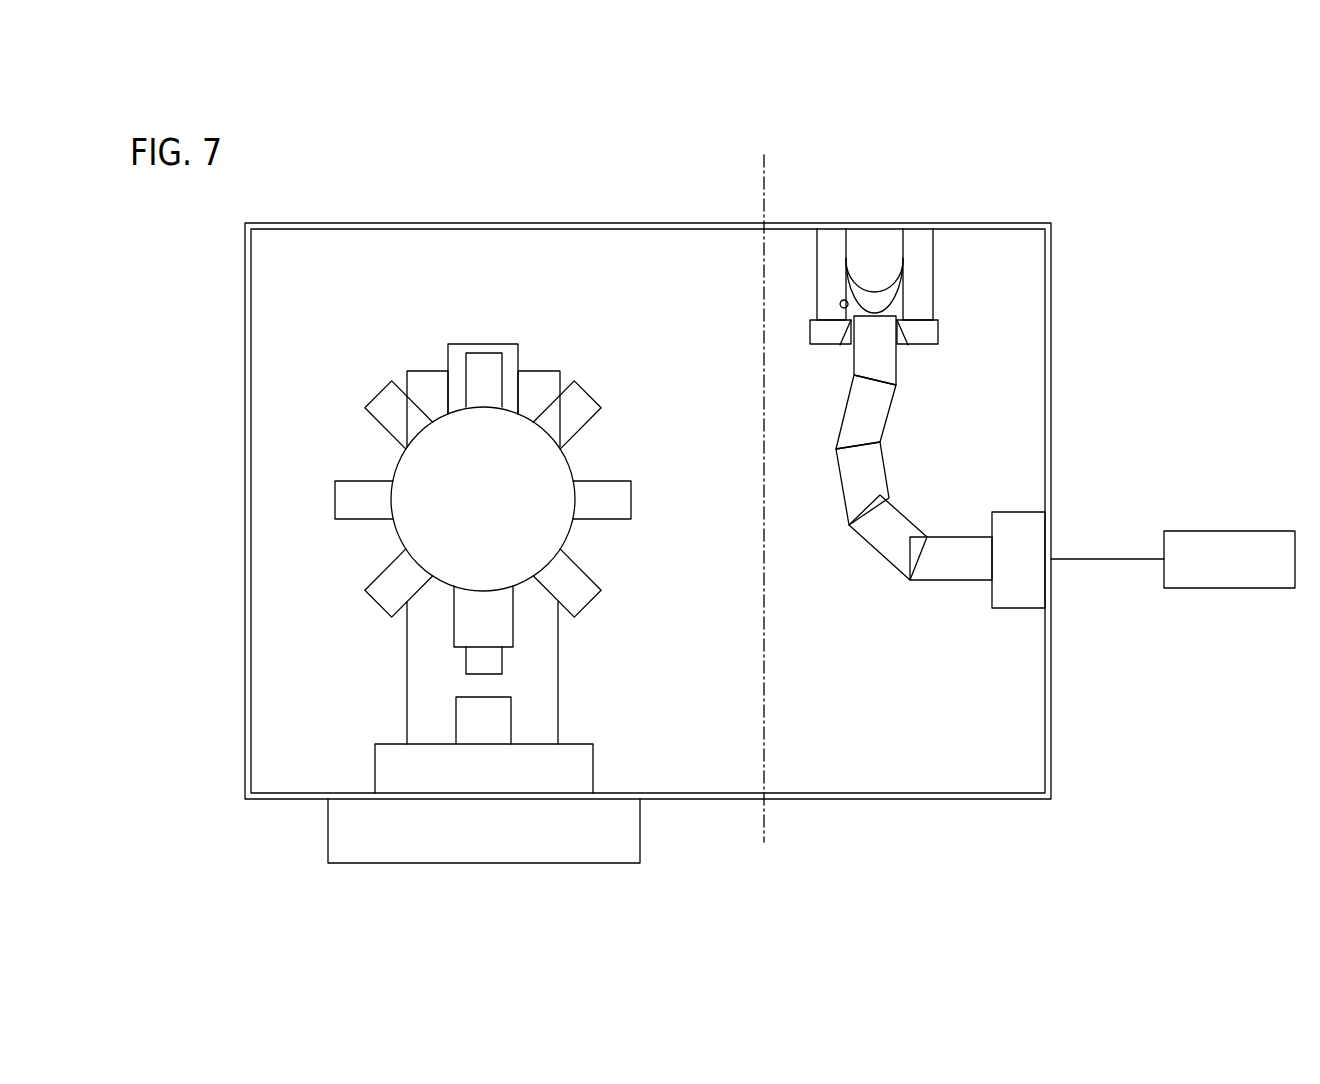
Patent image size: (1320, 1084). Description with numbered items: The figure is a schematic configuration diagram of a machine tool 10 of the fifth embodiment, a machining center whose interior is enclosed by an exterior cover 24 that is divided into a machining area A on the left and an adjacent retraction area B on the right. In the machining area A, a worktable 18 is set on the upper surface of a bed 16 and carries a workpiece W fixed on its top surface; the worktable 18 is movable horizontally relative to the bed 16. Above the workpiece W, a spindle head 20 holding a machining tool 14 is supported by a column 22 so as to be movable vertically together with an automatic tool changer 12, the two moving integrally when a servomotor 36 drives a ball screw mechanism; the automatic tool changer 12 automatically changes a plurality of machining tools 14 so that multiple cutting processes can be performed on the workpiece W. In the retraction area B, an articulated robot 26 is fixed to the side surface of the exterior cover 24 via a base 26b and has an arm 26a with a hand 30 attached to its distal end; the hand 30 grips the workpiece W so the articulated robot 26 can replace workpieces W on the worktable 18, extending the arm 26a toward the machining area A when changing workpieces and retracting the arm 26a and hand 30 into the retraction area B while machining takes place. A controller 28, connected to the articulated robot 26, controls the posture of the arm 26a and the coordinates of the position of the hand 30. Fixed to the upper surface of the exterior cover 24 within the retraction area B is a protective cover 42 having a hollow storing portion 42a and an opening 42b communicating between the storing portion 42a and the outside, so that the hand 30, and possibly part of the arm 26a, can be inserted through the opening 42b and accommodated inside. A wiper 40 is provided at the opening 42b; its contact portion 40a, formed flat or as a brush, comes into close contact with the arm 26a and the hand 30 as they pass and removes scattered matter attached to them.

The machine tool 10 is at (634, 492).
The automatic tool changer 12 is at (413, 466).
The machining tool 14 is at (480, 662).
The bed 16 is at (347, 836).
The worktable 18 is at (393, 773).
The spindle head 20 is at (490, 619).
The column 22 is at (431, 385).
The exterior cover 24 is at (244, 381).
The articulated robot 26 is at (977, 500).
The arm 26a is at (945, 565).
The base 26b is at (1035, 529).
The controller 28 is at (1220, 531).
The hand 30 is at (888, 293).
The servomotor 36 is at (484, 349).
The wiper 40 is at (928, 333).
The contact portion 40a is at (898, 330).
The protective cover 42 is at (944, 261).
The storing portion 42a is at (899, 247).
The opening 42b is at (842, 304).
The machining area A is at (265, 433).
The retraction area B is at (1028, 374).
The workpiece W is at (468, 714).